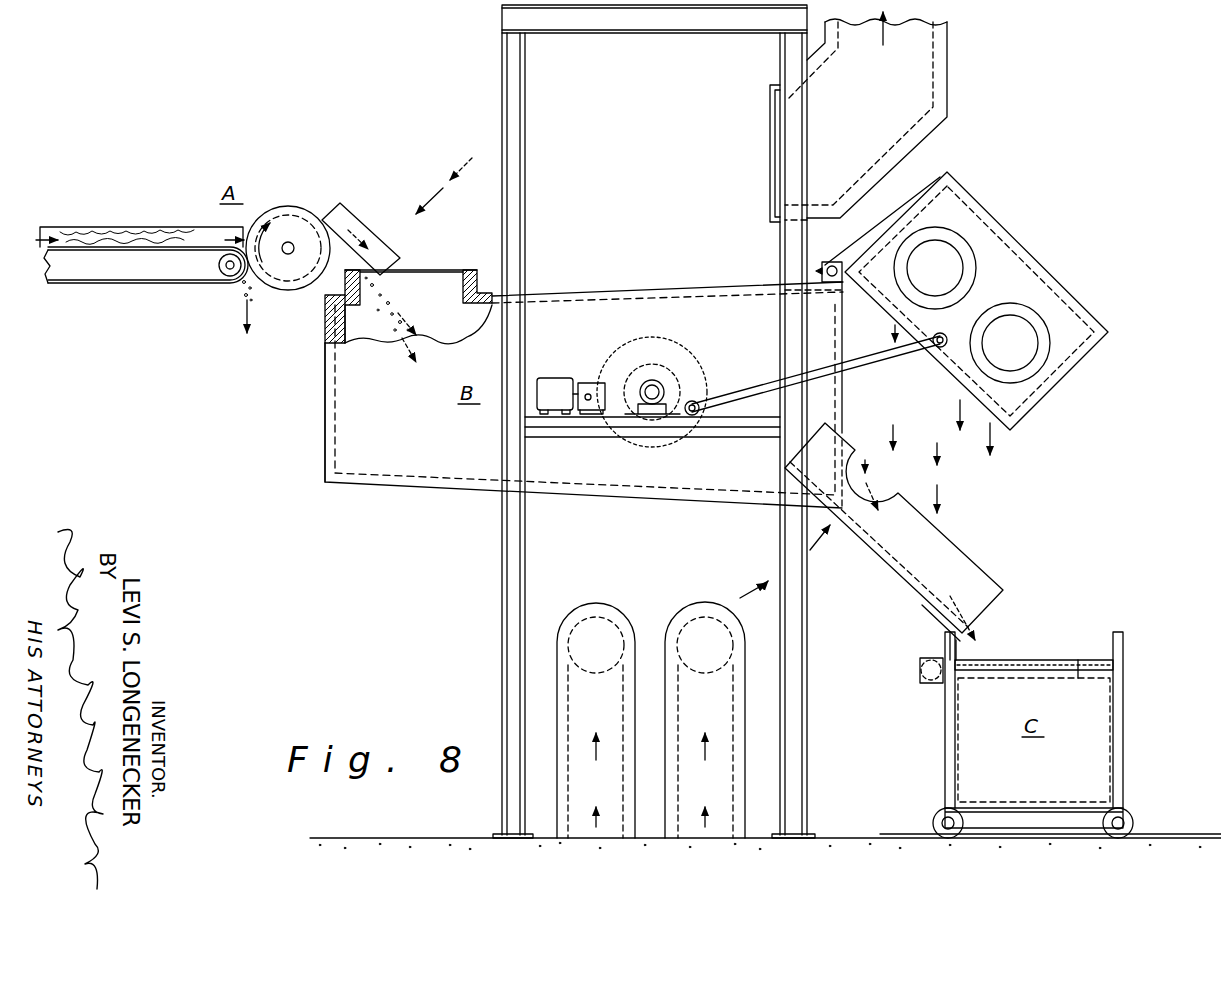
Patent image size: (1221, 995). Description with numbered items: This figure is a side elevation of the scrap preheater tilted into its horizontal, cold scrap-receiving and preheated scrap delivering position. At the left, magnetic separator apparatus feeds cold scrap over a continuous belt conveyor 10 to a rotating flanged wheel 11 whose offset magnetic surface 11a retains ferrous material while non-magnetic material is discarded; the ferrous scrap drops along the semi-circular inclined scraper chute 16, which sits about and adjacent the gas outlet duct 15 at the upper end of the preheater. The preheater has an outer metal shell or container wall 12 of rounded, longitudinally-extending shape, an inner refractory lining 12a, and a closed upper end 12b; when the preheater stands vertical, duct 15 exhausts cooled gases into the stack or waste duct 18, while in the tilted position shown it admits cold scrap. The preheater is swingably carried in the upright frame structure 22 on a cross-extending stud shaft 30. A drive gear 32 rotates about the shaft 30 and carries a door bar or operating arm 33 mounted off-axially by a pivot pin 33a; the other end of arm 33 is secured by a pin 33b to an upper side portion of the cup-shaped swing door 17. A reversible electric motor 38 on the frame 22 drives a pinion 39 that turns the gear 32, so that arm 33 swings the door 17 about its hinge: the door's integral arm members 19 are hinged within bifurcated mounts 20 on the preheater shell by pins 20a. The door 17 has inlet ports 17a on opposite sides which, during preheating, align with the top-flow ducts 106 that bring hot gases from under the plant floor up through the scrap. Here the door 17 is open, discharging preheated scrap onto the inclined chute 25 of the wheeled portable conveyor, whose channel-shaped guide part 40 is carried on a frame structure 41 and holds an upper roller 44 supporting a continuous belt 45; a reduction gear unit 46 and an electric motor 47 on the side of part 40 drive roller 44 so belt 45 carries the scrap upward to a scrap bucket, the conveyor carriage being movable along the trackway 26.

The continuous belt conveyor 10 is at (145, 250).
The rotating flanged wheel 11 is at (283, 207).
The offset magnetic surface 11a is at (322, 215).
The outer metal shell or container wall 12 is at (327, 332).
The inner refractory lining 12a is at (338, 322).
The upper end 12b is at (325, 407).
The gas outlet duct 15 is at (440, 278).
The semi-circular inclined scraper chute 16 is at (352, 210).
The swing door 17 is at (1062, 287).
The inlet ports 17a is at (962, 252).
The stack or waste duct 18 is at (947, 88).
The integral arm members 19 is at (905, 193).
The bifurcated mounts 20 is at (832, 262).
The pins 20a is at (842, 292).
The upright frame structure 22 is at (505, 602).
The inclined chute 25 is at (968, 552).
The trackway 26 is at (1178, 834).
The stud shaft 30 is at (662, 390).
The drive gear 32 is at (690, 352).
The door bar or operating arm 33 is at (838, 368).
The pivot pin 33a is at (697, 415).
The pin 33b is at (940, 348).
The electric motor 38 is at (553, 378).
The pinion 39 is at (590, 383).
The guide part 40 is at (1123, 640).
The frame structure 41 is at (1123, 754).
The upper roller 44 is at (1080, 678).
The continuous belt 45 is at (1025, 662).
The reduction gear unit 46 is at (925, 683).
The electric motor 47 is at (947, 652).
The top-flow ducts 106 is at (612, 795).